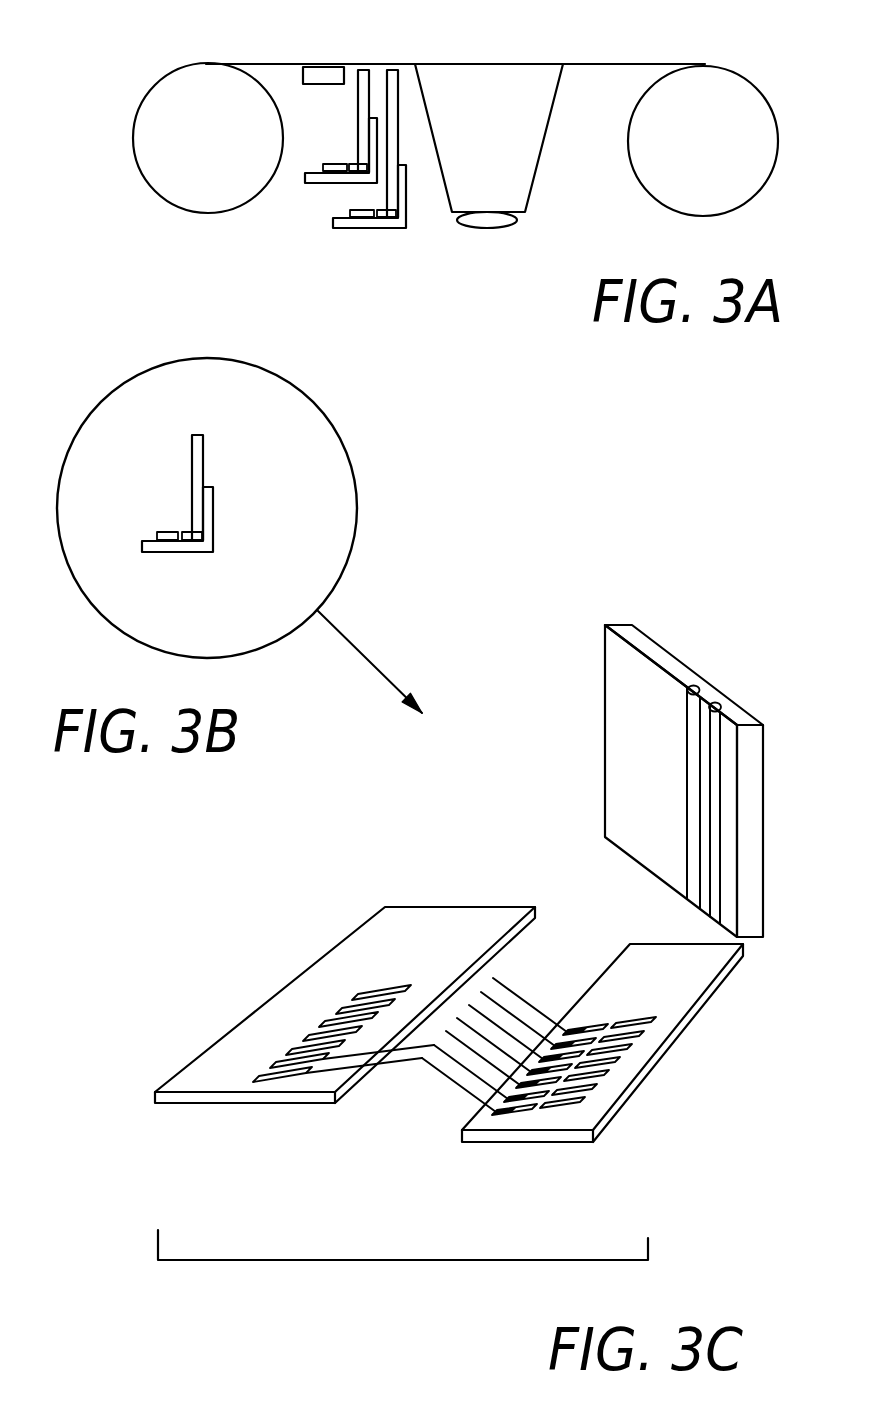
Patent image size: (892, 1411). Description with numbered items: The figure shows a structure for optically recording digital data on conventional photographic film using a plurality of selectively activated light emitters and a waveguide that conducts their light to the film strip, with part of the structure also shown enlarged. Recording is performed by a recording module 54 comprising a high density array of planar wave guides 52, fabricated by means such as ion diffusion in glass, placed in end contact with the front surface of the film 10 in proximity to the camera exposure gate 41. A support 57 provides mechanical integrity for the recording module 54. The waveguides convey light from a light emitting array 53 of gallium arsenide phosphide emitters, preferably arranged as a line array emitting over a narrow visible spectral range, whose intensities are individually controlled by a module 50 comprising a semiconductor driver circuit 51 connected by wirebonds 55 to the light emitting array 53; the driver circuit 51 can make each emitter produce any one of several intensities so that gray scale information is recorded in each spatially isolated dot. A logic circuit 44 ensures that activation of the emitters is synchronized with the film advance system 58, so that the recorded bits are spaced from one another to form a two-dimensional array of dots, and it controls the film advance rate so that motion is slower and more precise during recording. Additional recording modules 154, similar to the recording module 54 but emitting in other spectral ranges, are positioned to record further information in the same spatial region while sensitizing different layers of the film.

In FIG. 3A, the film 10 is at (283, 64).
In FIG. 3A, the logic circuit 44 is at (341, 67).
In FIG. 3A, the camera exposure gate 41 is at (505, 64).
In FIG. 3A, the film advance system 58 is at (227, 154).
In FIG. 3A, the recording module 54 is at (358, 119).
In FIG. 3B, the recording module 54 is at (353, 532).
In FIG. 3A, the recording modules 154 is at (398, 229).
In FIG. 3B, the planar wave guides 52 is at (203, 462).
In FIG. 3C, the planar wave guides 52 is at (655, 735).
In FIG. 3B, the support 57 is at (178, 553).
In FIG. 3C, the module 50 is at (367, 1260).
In FIG. 3C, the semiconductor driver circuit 51 is at (258, 1008).
In FIG. 3C, the light emitting array 53 is at (680, 1035).
In FIG. 3C, the wirebonds 55 is at (423, 1065).